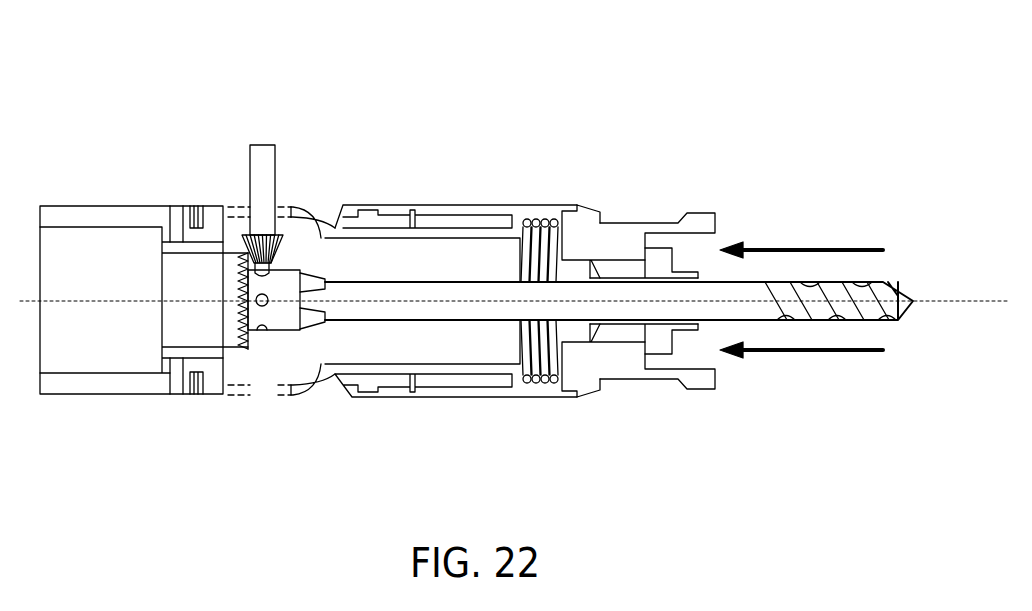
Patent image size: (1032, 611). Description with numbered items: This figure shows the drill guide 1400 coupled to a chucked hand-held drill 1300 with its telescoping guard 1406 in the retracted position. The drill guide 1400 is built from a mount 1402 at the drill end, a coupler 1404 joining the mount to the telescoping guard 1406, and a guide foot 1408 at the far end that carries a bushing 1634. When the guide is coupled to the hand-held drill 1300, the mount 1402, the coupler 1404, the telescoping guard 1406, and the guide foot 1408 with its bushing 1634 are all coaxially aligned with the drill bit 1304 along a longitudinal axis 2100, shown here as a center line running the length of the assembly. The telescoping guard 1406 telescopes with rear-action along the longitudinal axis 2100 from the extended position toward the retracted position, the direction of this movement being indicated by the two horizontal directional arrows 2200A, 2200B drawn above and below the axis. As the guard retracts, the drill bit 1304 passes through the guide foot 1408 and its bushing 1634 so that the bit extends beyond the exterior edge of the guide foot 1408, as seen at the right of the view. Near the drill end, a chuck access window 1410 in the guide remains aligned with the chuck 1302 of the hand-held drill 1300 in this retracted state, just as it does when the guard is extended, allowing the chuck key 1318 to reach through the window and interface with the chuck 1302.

The hand-held drill 1300 is at (135, 67).
The chuck 1302 is at (290, 263).
The drill bit 1304 is at (488, 292).
The chuck key 1318 is at (250, 168).
The drill guide 1400 is at (816, 142).
The mount 1402 is at (118, 205).
The coupler 1404 is at (323, 397).
The telescoping guard 1406 is at (487, 432).
The guide foot 1408 is at (645, 380).
The chuck access window 1410 is at (285, 200).
The bushing 1634 is at (657, 357).
The longitudinal axis 2100 is at (916, 306).
The horizontal directional arrow 2200A is at (805, 249).
The horizontal directional arrow 2200B is at (808, 352).